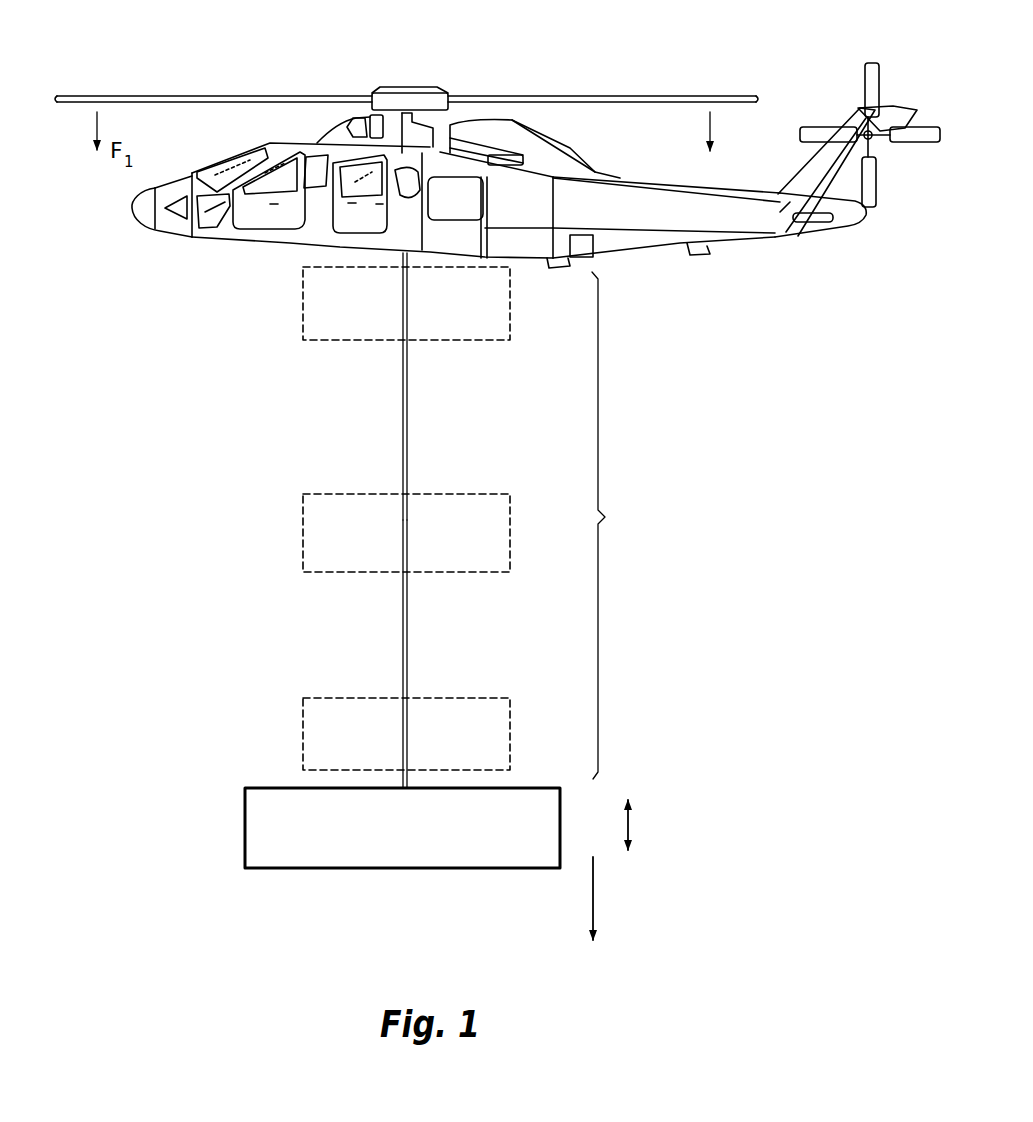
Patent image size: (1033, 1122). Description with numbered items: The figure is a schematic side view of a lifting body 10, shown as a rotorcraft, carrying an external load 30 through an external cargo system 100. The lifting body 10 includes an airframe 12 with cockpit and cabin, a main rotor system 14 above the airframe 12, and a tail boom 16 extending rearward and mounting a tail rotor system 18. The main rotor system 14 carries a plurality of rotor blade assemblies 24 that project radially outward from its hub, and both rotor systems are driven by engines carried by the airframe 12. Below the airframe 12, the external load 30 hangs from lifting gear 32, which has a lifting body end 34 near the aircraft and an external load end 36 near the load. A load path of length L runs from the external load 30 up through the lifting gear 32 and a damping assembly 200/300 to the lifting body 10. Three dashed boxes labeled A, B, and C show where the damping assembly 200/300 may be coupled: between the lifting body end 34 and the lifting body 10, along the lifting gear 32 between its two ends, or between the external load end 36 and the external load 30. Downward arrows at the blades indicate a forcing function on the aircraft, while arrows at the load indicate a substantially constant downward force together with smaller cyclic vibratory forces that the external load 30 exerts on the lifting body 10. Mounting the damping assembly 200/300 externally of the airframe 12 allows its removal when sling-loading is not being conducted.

The lifting body 10 is at (174, 254).
The airframe 12 is at (290, 232).
The main rotor system 14 is at (490, 88).
The tail boom 16 is at (665, 216).
The tail rotor system 18 is at (888, 75).
The rotor blade assemblies 24 is at (213, 93).
The external load 30 is at (296, 870).
The lifting gear 32 is at (403, 458).
The lifting body end 34 is at (415, 357).
The external load end 36 is at (414, 681).
The external cargo system 100 is at (172, 499).
The damping assembly 200 is at (393, 518).
The damping assembly 300 is at (393, 518).